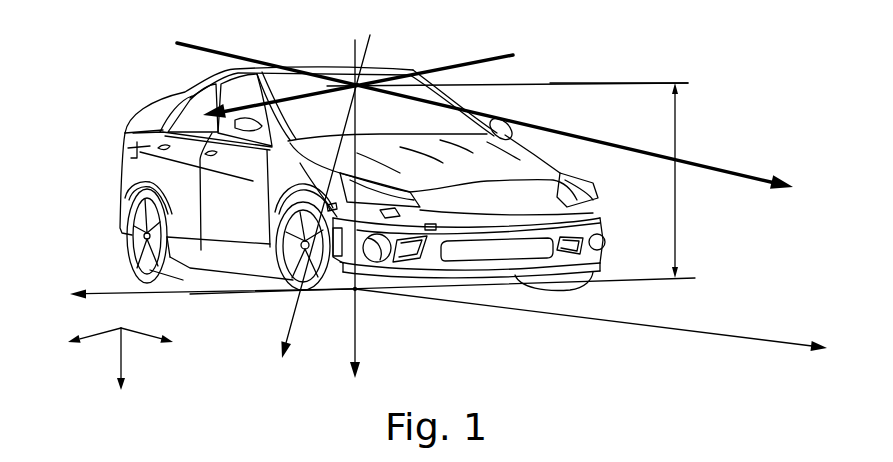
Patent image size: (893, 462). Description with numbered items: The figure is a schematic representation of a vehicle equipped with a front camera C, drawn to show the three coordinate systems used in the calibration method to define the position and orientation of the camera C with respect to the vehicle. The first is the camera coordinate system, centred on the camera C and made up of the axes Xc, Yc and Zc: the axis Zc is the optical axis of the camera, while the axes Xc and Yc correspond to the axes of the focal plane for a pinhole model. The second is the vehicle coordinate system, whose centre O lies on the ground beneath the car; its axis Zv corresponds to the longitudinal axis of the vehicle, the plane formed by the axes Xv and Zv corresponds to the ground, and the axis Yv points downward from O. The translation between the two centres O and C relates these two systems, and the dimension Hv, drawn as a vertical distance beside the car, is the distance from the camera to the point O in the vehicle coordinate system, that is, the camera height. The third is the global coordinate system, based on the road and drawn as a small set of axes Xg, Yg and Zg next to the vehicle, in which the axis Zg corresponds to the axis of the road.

The camera C is at (360, 80).
The camera coordinate system x-axis Xc is at (350, 94).
The camera coordinate system y-axis Yc is at (314, 201).
The camera coordinate system z-axis Zc is at (490, 116).
The centre of the vehicle coordinate system O is at (348, 292).
The vehicle coordinate system x-axis Xv is at (212, 311).
The vehicle coordinate system y-axis Yv is at (368, 216).
The vehicle coordinate system z-axis Zv is at (595, 320).
The camera height Hv is at (675, 200).
The global coordinate system x-axis Xg is at (94, 350).
The global coordinate system y-axis Yg is at (131, 367).
The global coordinate system z-axis Zg is at (153, 331).